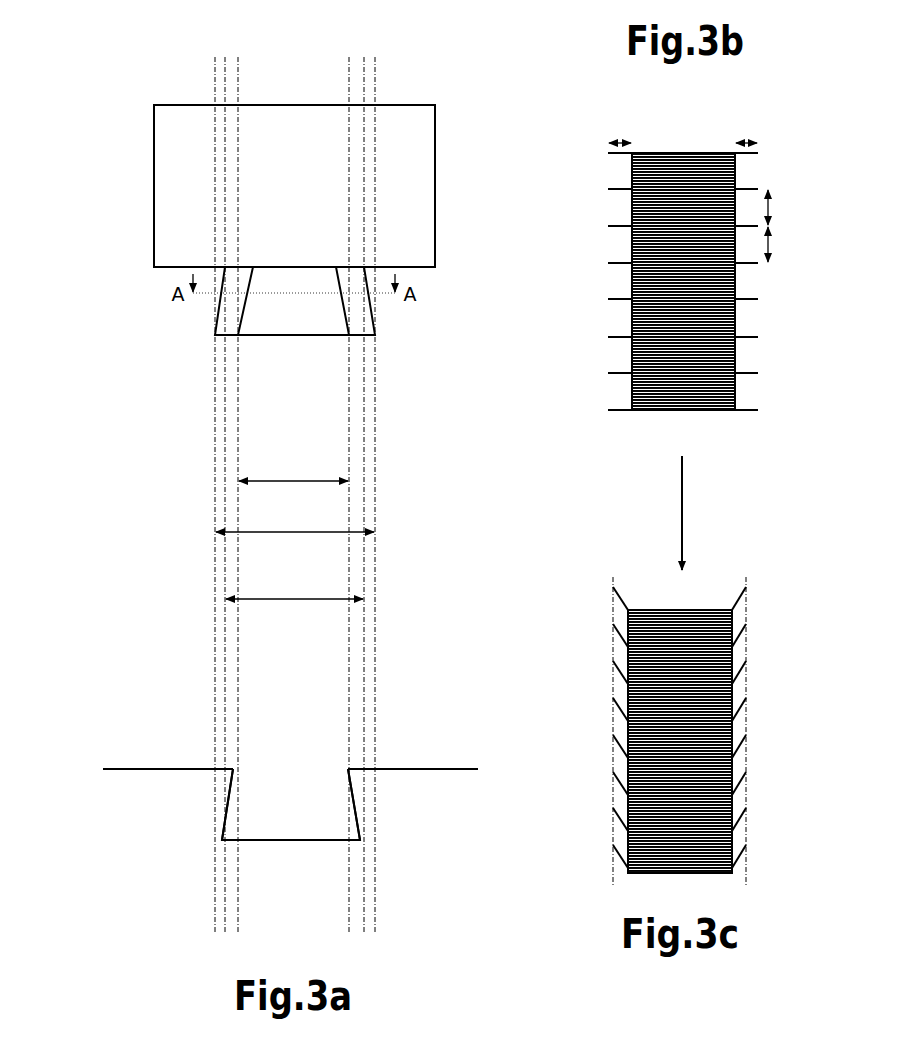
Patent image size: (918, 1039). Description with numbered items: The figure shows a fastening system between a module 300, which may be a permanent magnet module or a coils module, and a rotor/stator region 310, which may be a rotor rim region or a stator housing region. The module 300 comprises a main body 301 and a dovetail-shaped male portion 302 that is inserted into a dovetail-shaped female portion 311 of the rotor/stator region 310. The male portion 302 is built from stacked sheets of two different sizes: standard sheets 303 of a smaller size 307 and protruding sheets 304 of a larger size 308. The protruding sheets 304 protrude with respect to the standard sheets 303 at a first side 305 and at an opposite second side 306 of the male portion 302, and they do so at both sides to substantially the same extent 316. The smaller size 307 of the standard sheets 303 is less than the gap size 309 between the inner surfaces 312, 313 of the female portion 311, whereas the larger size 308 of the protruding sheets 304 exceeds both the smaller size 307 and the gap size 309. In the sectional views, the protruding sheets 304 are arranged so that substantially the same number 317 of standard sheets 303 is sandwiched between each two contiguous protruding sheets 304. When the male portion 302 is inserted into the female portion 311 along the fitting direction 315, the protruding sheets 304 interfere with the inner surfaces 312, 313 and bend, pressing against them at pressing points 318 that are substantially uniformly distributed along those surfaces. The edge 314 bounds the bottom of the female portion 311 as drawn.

In FIG. 3A, the module 300 is at (143, 83).
In FIG. 3A, the main body 301 is at (177, 175).
In FIG. 3A, the male portion 302 is at (295, 337).
In FIG. 3A, the standard sheets 303 is at (345, 307).
In FIG. 3B, the standard sheets 303 is at (632, 243).
In FIG. 3A, the protruding sheets 304 is at (220, 314).
In FIG. 3B, the protruding sheets 304 is at (608, 263).
In FIG. 3C, the protruding sheets 304 is at (613, 697).
In FIG. 3A, the first side 305 is at (362, 343).
In FIG. 3B, the first side 305 is at (747, 414).
In FIG. 3A, the second side 306 is at (227, 343).
In FIG. 3B, the second side 306 is at (613, 414).
In FIG. 3A, the smaller size 307 is at (293, 468).
In FIG. 3A, the larger size 308 is at (295, 522).
In FIG. 3A, the gap size 309 is at (294, 588).
In FIG. 3A, the rotor/stator region 310 is at (163, 806).
In FIG. 3A, the female portion 311 is at (255, 815).
In FIG. 3A, the inner surface 312 is at (235, 807).
In FIG. 3C, the inner surface 312 is at (613, 875).
In FIG. 3A, the inner surface 313 is at (345, 792).
In FIG. 3C, the inner surface 313 is at (746, 875).
In FIG. 3A, the groove bottom edge 314 is at (292, 835).
In FIG. 3B, the fitting direction 315 is at (682, 505).
In FIG. 3B, the protruding extent 316 is at (622, 138).
In FIG. 3B, the number of standard sheets 317 is at (770, 245).
In FIG. 3C, the pressing points 318 is at (745, 733).